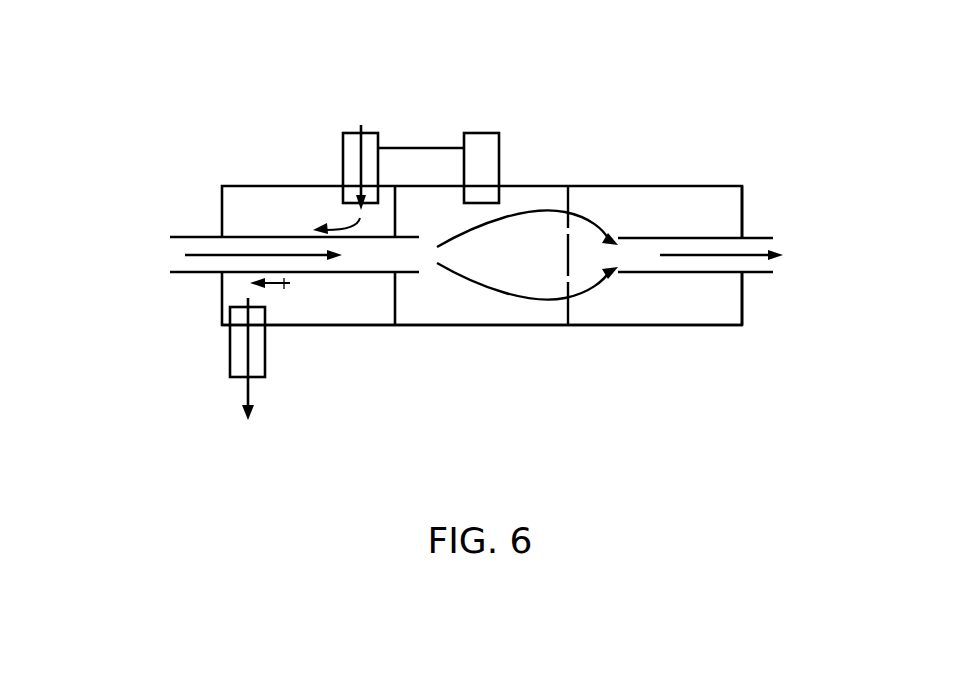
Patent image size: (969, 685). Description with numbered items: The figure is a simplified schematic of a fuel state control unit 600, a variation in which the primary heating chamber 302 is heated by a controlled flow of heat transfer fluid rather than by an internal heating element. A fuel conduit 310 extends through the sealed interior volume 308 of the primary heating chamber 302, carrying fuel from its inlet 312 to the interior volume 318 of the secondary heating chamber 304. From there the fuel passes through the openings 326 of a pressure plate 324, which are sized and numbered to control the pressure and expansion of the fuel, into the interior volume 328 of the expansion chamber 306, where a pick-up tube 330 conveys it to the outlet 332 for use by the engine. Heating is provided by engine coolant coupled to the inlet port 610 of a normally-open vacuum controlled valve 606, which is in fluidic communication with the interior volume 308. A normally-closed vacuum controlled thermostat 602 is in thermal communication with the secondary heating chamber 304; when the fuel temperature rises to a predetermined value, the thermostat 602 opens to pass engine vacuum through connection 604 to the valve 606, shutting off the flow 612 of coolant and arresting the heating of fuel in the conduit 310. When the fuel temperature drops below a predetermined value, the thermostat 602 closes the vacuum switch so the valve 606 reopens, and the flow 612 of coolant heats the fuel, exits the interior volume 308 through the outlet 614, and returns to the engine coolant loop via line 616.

The fuel state control unit 600 is at (150, 85).
The primary heating chamber 302 is at (220, 202).
The secondary heating chamber 304 is at (438, 327).
The expansion chamber 306 is at (742, 197).
The interior volume 308 is at (268, 195).
The fuel conduit 310 is at (360, 273).
The inlet 312 is at (162, 236).
The interior volume 318 is at (515, 307).
The pressure plate 324 is at (570, 186).
The openings 326 is at (568, 217).
The interior volume 328 is at (723, 308).
The pick-up tube 330 is at (672, 238).
The outlet 332 is at (785, 270).
The vacuum controlled thermostat 602 is at (490, 155).
The connection 604 is at (410, 148).
The vacuum controlled valve 606 is at (378, 128).
The inlet port 610 is at (350, 168).
The flow 612 is at (283, 283).
The outlet 614 is at (237, 360).
The line 616 is at (245, 383).